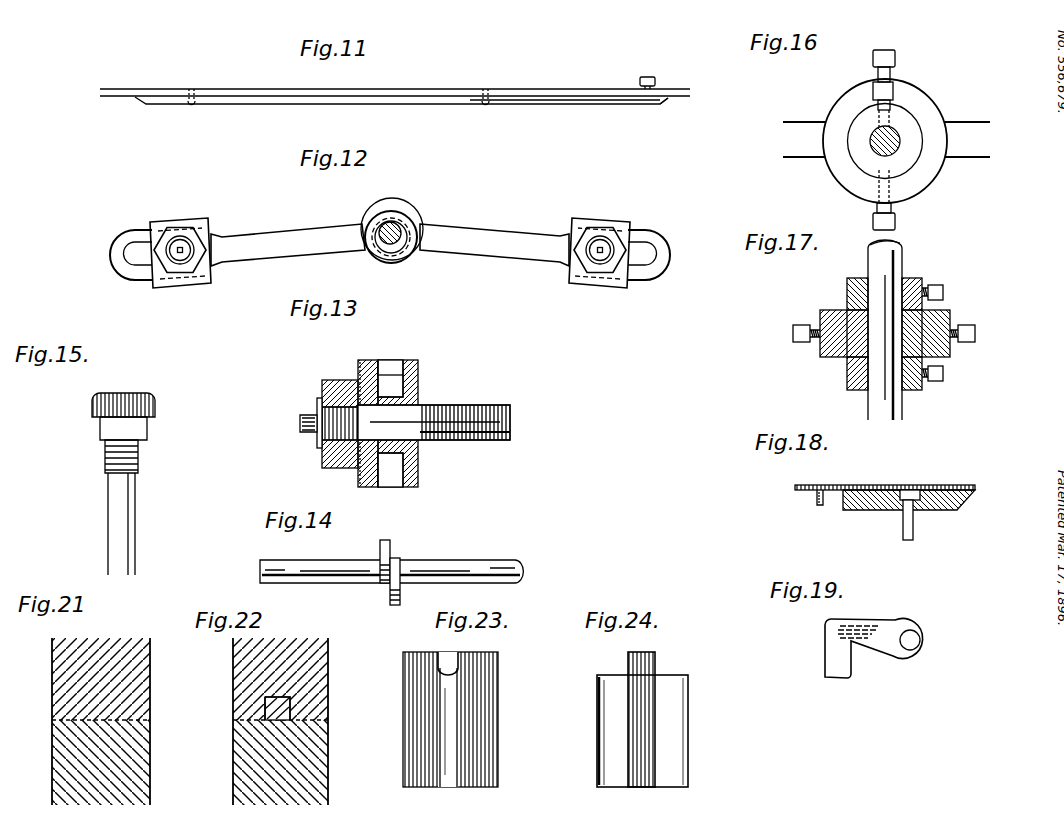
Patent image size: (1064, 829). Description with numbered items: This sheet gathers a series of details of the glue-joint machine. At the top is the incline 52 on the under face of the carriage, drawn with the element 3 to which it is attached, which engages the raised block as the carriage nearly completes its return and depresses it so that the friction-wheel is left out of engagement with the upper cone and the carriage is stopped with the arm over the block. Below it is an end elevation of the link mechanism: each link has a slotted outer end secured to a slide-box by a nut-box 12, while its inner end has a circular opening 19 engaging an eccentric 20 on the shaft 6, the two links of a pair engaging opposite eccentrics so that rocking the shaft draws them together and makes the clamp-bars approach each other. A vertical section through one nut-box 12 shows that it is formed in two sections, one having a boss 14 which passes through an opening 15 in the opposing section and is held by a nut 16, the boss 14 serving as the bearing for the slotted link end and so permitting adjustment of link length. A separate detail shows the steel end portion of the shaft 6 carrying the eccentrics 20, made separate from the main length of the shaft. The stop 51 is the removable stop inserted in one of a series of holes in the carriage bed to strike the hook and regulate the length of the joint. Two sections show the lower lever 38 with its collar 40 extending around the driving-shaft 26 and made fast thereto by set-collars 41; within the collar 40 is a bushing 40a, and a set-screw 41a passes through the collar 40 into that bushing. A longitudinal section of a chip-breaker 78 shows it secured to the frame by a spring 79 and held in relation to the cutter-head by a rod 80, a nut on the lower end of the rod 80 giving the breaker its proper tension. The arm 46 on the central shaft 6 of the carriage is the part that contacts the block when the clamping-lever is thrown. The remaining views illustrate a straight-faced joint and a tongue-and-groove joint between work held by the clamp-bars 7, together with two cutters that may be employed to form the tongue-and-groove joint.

In FIG. 11, the rod 3 is at (444, 92).
In FIG. 17, the rod 3 is at (868, 253).
In FIG. 11, the incline 52 is at (526, 104).
In FIG. 13, the nut-box 12 is at (410, 362).
In FIG. 12, the circular opening 19 is at (392, 207).
In FIG. 12, the eccentric 20 is at (402, 214).
In FIG. 14, the eccentric 20 is at (388, 548).
In FIG. 12, the shaft 6 is at (396, 236).
In FIG. 14, the shaft 6 is at (448, 560).
In FIG. 13, the nut 16 is at (330, 380).
In FIG. 13, the boss 14 is at (348, 380).
In FIG. 13, the opening 15 is at (390, 384).
In FIG. 15, the stop 51 is at (139, 484).
In FIG. 16, the collar 40 is at (933, 116).
In FIG. 17, the collar 40 is at (818, 318).
In FIG. 16, the second lever 38 is at (982, 130).
In FIG. 16, the shaft 26 is at (892, 128).
In FIG. 17, the shaft 26 is at (905, 268).
In FIG. 16, the set-collar 41 is at (913, 142).
In FIG. 17, the set-collar 41 is at (847, 290).
In FIG. 17, the clamp-bar 7 is at (902, 252).
In FIG. 17, the set-screw 41a is at (993, 333).
In FIG. 17, the bushing 40a is at (950, 357).
In FIG. 18, the chip-breaker 78 is at (889, 475).
In FIG. 18, the spring 79 is at (840, 485).
In FIG. 18, the rod 80 is at (914, 528).
In FIG. 19, the arm 46 is at (874, 633).